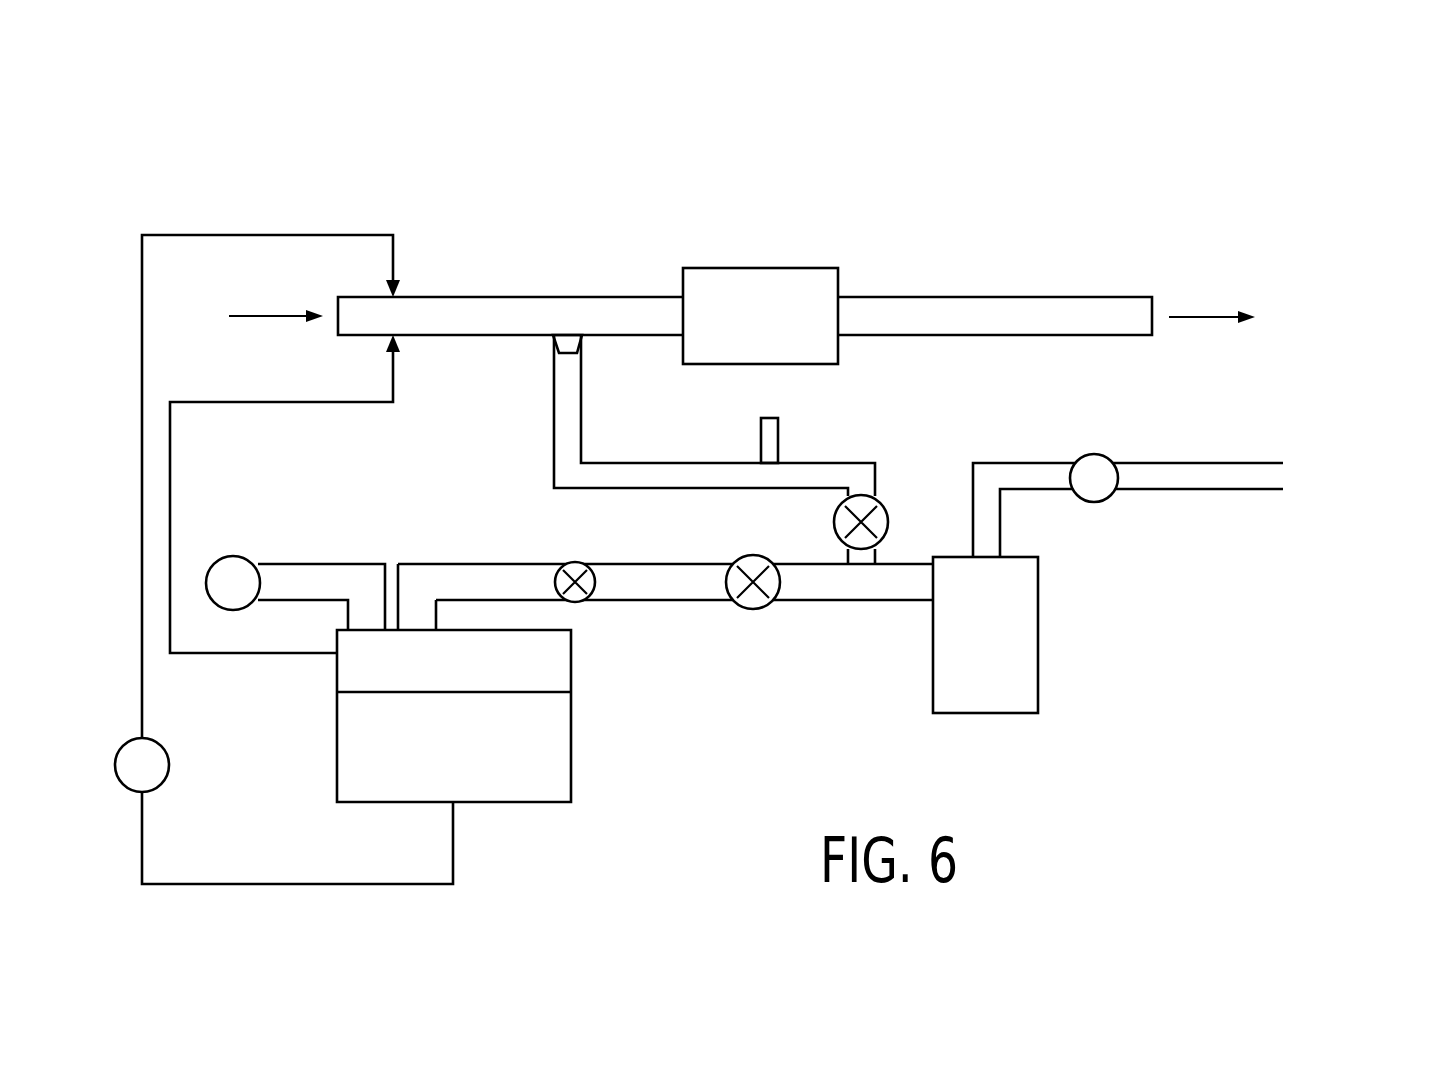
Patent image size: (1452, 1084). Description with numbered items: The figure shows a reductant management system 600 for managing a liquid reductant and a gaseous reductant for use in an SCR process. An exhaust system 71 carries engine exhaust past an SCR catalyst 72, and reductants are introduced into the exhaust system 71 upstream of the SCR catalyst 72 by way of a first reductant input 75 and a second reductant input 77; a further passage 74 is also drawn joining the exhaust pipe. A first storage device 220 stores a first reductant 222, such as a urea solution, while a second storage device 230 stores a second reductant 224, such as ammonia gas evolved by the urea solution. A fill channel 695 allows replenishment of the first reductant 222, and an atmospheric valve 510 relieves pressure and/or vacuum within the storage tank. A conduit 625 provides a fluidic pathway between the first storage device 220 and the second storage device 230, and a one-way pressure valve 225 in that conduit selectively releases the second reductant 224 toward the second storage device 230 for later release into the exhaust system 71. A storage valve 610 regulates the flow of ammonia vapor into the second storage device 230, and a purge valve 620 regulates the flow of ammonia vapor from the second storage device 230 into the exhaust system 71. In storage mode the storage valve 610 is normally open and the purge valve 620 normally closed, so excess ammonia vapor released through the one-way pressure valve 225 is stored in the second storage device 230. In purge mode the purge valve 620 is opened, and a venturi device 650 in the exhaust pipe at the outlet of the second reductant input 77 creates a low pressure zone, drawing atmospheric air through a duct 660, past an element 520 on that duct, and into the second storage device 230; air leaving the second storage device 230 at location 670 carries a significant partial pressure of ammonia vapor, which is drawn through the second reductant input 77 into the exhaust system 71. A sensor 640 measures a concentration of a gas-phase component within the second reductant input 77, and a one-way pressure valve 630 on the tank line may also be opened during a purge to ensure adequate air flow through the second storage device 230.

The reductant management system 600 is at (1182, 160).
The first reductant input 75 is at (167, 234).
The exhaust system 71 is at (463, 296).
The SCR catalyst 72 is at (765, 267).
The passage 74 is at (287, 401).
The venturi device 650 is at (553, 340).
The second reductant input 77 is at (583, 390).
The sensor 640 is at (760, 430).
The purge valve 620 is at (888, 512).
The duct 660 is at (1213, 480).
The filter 520 is at (1093, 455).
The second storage device 230 is at (1039, 688).
The conduit 625 is at (623, 577).
The location 670 is at (932, 580).
The one-way pressure valve 225 is at (577, 601).
The storage valve 610 is at (753, 609).
The fill channel 695 is at (337, 562).
The atmospheric valve 510 is at (230, 557).
The first storage device 220 is at (489, 773).
The second reductant 224 is at (555, 677).
The first reductant 222 is at (555, 755).
The one-way pressure valve 630 is at (169, 765).